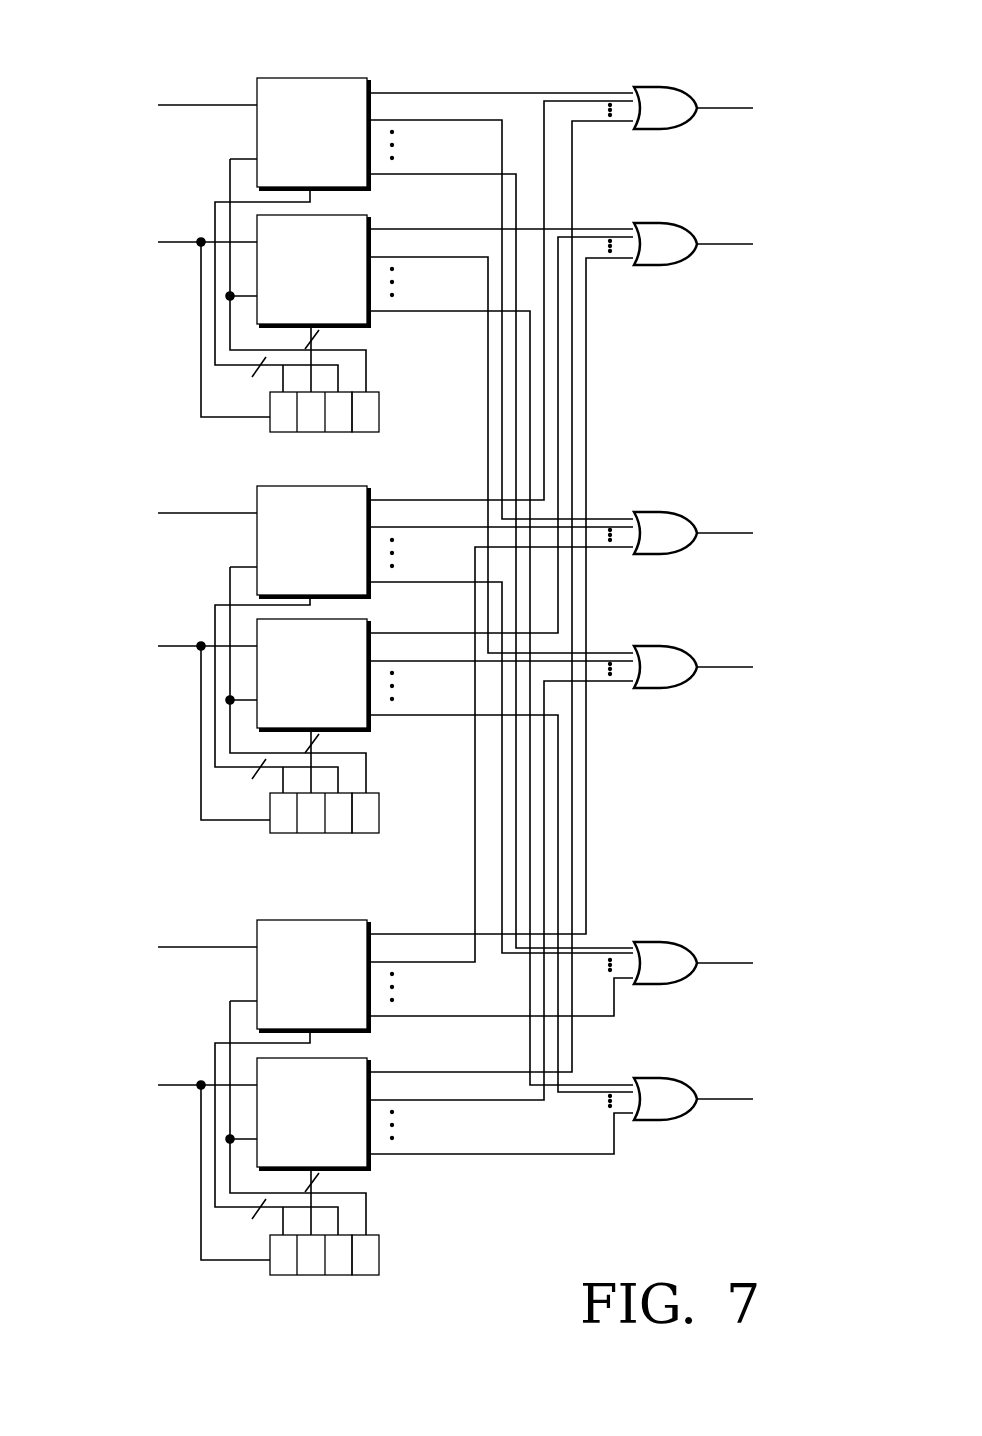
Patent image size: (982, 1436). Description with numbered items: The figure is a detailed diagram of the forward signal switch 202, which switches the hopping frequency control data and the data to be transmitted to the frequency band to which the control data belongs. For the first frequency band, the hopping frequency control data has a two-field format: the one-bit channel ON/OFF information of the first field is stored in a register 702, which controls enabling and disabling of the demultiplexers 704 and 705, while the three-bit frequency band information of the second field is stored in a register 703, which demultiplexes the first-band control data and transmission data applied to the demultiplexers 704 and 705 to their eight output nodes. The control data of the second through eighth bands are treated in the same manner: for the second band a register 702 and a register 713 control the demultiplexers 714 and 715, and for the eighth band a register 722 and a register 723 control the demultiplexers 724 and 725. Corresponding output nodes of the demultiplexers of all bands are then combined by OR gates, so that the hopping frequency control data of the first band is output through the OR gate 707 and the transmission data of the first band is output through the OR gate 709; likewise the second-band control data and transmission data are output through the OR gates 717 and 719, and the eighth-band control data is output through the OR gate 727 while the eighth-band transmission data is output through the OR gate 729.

The forward signal switch 202 is at (812, 71).
The demultiplexer 705 is at (345, 189).
The demultiplexer 704 is at (345, 326).
The register 703 is at (270, 438).
The register 702 is at (353, 438).
The demultiplexer 715 is at (345, 597).
The demultiplexer 714 is at (345, 730).
The register 713 is at (270, 839).
The demultiplexer 725 is at (345, 1031).
The demultiplexer 724 is at (345, 1169).
The register 723 is at (270, 1281).
The register 722 is at (353, 1281).
The OR gate 709 is at (650, 130).
The OR gate 707 is at (650, 266).
The OR gate 719 is at (650, 555).
The OR gate 717 is at (650, 689).
The OR gate 729 is at (650, 985).
The OR gate 727 is at (650, 1121).